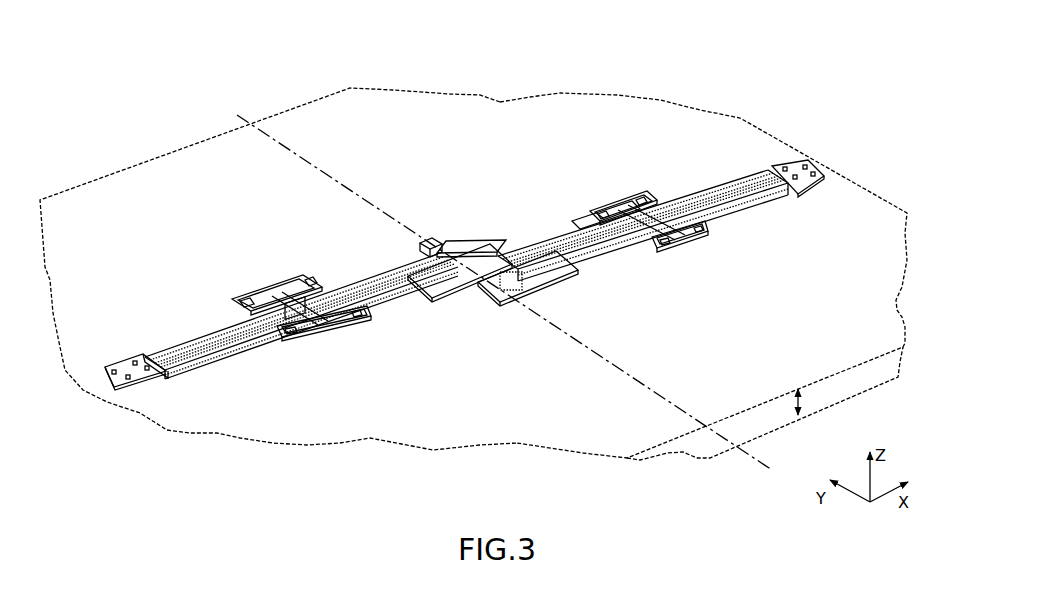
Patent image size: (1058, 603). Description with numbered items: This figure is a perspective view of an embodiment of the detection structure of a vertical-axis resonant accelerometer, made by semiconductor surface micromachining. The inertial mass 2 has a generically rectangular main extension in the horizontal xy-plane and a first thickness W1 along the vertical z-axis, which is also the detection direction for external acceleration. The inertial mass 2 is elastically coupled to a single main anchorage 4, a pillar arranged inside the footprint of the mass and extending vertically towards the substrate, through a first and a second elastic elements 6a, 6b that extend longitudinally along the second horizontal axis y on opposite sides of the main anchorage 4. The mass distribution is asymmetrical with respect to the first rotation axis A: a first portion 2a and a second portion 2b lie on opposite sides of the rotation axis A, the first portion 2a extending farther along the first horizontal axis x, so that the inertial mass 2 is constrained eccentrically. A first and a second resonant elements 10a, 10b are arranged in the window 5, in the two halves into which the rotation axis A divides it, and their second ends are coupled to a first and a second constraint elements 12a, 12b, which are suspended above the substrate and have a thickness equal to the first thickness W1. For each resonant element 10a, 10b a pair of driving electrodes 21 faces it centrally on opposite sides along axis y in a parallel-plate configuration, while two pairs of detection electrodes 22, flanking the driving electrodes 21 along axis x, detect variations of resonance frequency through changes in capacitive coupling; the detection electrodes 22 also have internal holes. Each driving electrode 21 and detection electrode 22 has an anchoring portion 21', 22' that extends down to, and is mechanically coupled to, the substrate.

The inertial mass 2 is at (473, 230).
The first portion 2a is at (88, 203).
The second portion 2b is at (800, 0).
The main anchorage 4 is at (460, 270).
The window 5 is at (391, 258).
The first elastic element 6a is at (439, 247).
The second elastic element 6b is at (507, 268).
The first resonant element 10a is at (190, 335).
The second resonant element 10b is at (716, 190).
The first constraint element 12a is at (124, 378).
The second constraint element 12b is at (798, 165).
The driving electrodes 21 is at (547, 352).
The detection electrodes 22 is at (476, 264).
The anchoring portion 21' is at (464, 297).
The anchoring portion 22' is at (454, 295).
The first rotation axis A is at (245, 126).
The first thickness W1 is at (799, 403).